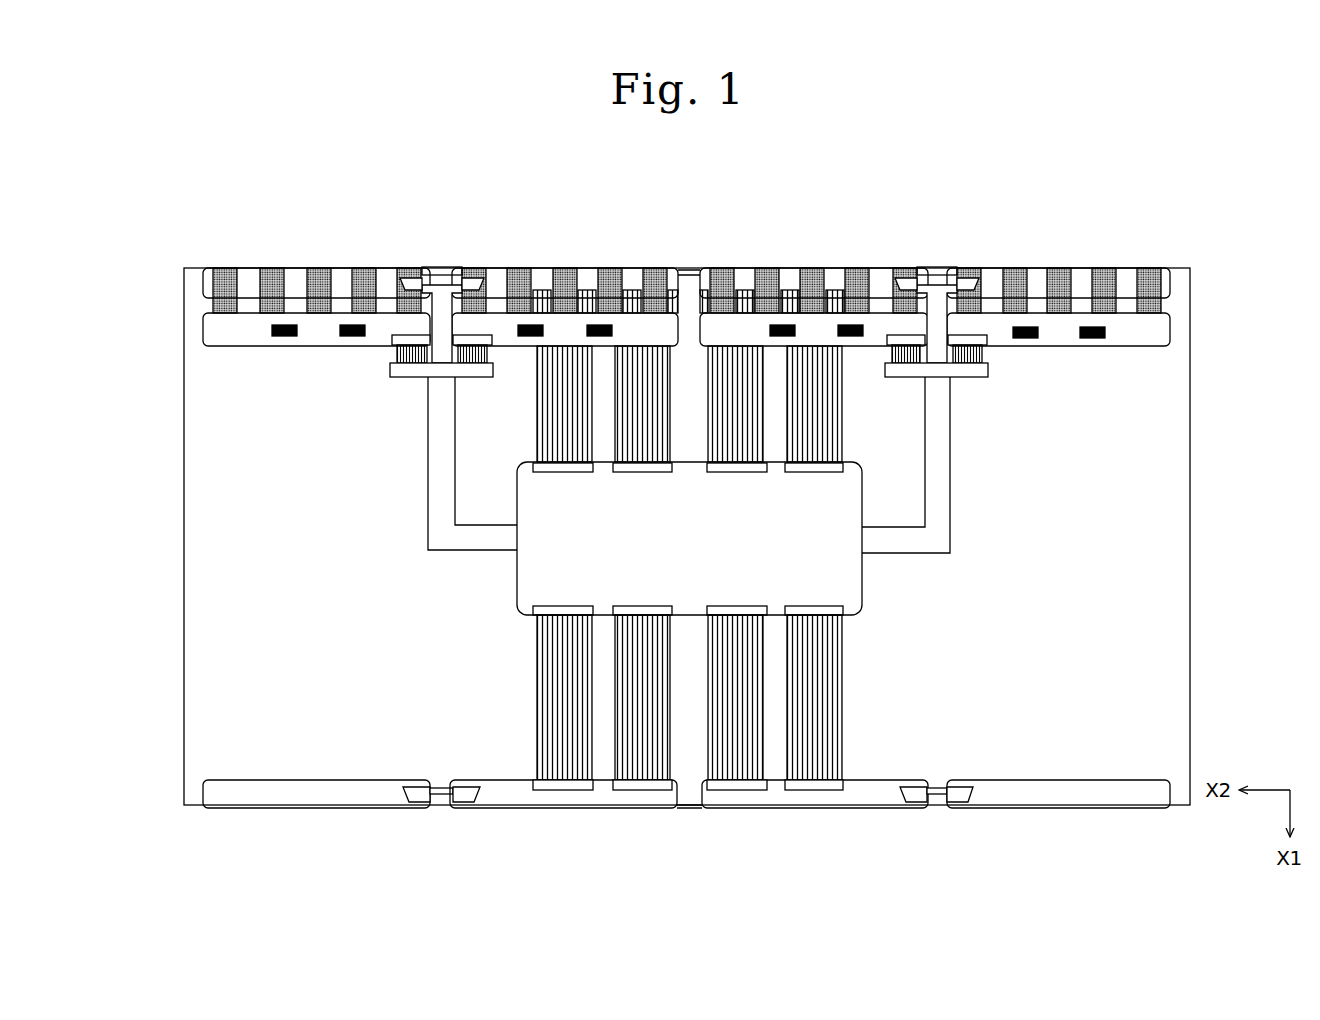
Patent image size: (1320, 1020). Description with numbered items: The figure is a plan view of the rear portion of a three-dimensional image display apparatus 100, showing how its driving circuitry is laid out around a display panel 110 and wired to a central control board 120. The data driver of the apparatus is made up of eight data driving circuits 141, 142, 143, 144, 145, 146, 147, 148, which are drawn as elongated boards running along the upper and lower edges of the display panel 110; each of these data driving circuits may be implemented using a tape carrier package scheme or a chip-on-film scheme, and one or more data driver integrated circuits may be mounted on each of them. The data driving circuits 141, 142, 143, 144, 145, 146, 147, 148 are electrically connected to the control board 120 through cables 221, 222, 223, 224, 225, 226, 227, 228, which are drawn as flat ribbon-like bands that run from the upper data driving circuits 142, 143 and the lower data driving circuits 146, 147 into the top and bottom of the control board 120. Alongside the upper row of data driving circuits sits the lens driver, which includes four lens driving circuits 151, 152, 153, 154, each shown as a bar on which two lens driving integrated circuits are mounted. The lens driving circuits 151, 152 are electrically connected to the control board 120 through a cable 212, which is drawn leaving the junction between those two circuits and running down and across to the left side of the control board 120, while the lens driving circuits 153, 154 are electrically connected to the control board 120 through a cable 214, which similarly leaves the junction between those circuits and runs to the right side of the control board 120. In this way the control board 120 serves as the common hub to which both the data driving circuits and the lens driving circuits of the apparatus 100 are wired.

The 3D image display apparatus 100 is at (1202, 192).
The display panel 110 is at (1190, 432).
The control board 120 is at (862, 573).
The data driving circuit 141 is at (249, 268).
The data driving circuit 142 is at (496, 268).
The data driving circuit 143 is at (745, 268).
The data driving circuit 144 is at (991, 268).
The data driving circuit 145 is at (297, 808).
The data driving circuit 146 is at (497, 808).
The data driving circuit 147 is at (880, 808).
The data driving circuit 148 is at (1080, 808).
The lens driving circuit 151 is at (268, 271).
The lens driving circuit 152 is at (565, 302).
The lens driving circuit 153 is at (814, 302).
The lens driving circuit 154 is at (1107, 271).
The cable 212 is at (428, 413).
The cable 214 is at (950, 413).
The cable 221 is at (537, 446).
The cable 222 is at (617, 420).
The cable 223 is at (764, 420).
The cable 224 is at (842, 447).
The cable 225 is at (537, 719).
The cable 226 is at (617, 684).
The cable 227 is at (764, 684).
The cable 228 is at (842, 719).